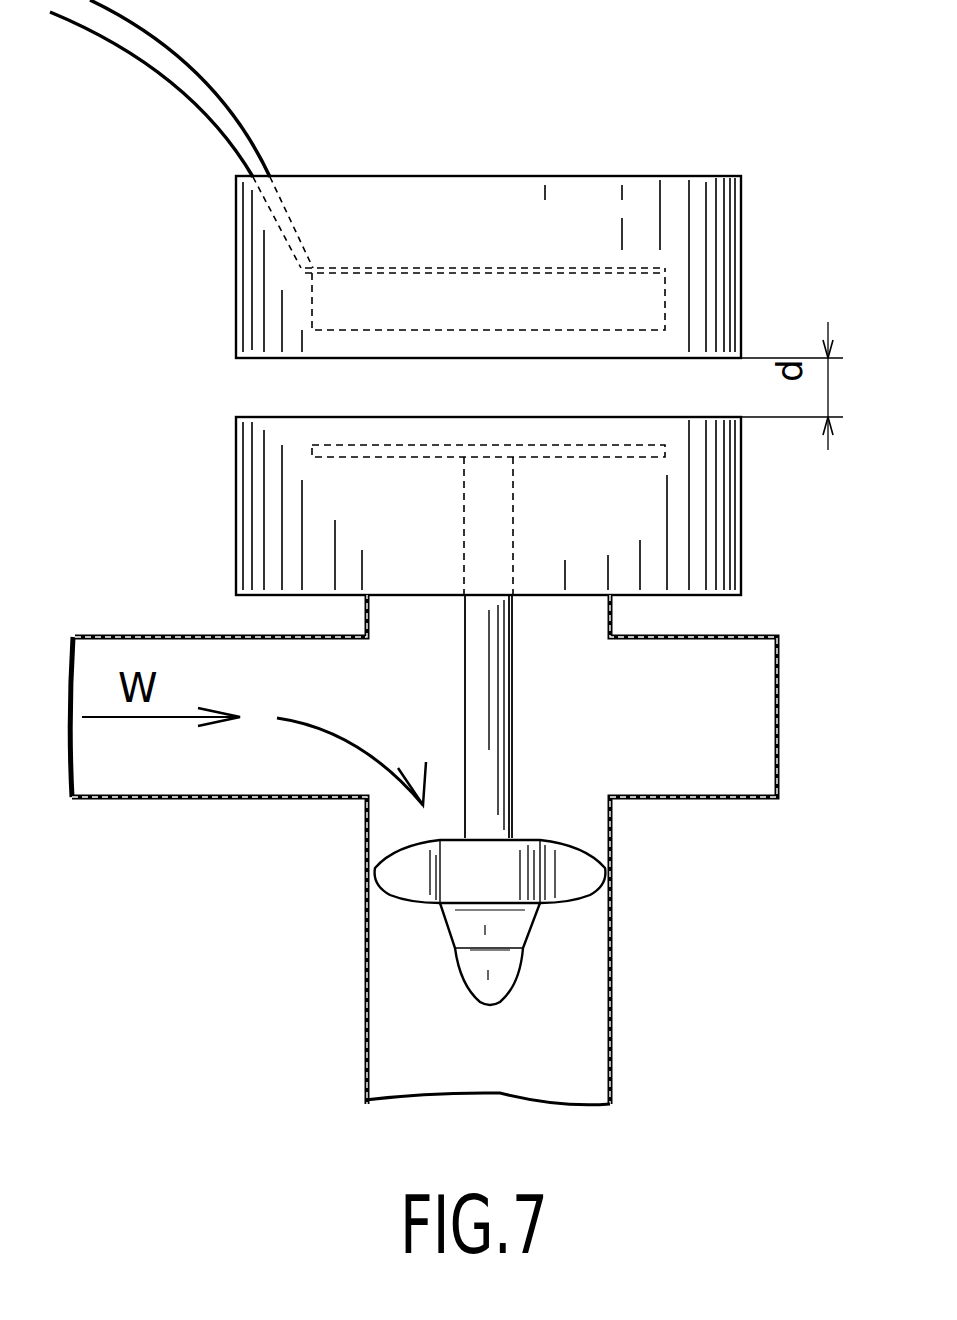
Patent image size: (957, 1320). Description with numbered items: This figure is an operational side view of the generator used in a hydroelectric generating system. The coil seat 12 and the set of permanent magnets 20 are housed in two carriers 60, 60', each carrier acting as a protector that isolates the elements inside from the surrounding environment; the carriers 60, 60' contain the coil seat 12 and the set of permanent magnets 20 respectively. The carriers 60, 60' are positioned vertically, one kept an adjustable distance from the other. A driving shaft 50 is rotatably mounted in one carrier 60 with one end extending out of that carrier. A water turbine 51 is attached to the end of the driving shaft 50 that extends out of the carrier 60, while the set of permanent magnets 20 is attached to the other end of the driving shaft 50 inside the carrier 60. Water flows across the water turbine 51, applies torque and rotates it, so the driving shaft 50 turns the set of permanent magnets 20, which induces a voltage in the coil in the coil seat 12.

The coil seat 12 is at (467, 273).
The set of permanent magnets 20 is at (563, 452).
The carrier 60 is at (539, 267).
The carrier 60' is at (544, 506).
The driving shaft 50 is at (517, 727).
The water turbine 51 is at (558, 892).